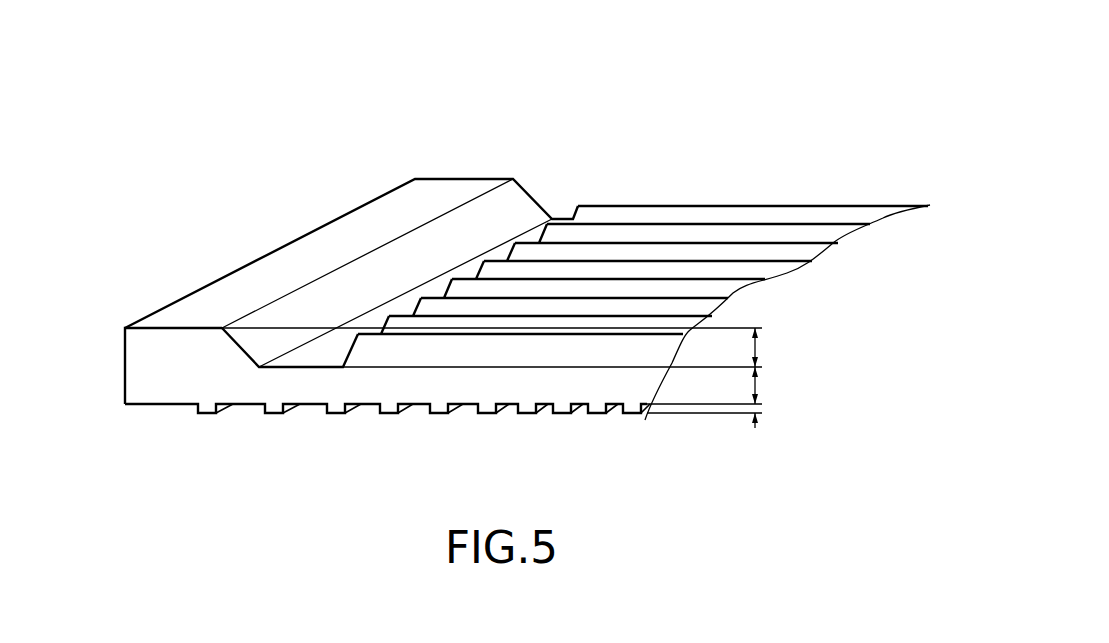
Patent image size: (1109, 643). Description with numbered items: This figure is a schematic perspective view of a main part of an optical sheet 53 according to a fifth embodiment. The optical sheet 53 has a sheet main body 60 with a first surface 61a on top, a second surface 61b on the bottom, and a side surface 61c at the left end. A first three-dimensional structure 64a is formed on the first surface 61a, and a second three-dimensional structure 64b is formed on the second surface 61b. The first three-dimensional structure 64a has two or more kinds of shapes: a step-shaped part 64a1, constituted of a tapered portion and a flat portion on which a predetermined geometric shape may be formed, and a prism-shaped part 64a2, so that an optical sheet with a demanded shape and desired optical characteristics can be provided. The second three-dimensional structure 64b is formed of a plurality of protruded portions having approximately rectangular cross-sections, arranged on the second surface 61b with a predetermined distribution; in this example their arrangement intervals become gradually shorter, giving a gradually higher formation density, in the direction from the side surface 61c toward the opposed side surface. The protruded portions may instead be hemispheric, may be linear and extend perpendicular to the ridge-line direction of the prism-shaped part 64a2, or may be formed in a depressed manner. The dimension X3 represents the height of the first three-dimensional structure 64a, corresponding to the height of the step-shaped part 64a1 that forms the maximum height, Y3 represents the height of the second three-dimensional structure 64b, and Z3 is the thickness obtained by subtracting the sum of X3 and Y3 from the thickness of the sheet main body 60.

The optical sheet 53 is at (285, 126).
The sheet main body 60 is at (152, 398).
The first surface 61a is at (441, 197).
The second surface 61b is at (312, 405).
The side surface 61c is at (125, 367).
The first 3-D structure 64a is at (687, 118).
The step-shaped part 64a1 is at (513, 205).
The prism-shaped part 64a2 is at (647, 215).
The second 3-D structure 64b is at (487, 410).
The height of the first 3-D structure X3 is at (777, 347).
The remaining thickness of the sheet main body Z3 is at (777, 385).
The height of the second 3-D structure Y3 is at (777, 416).